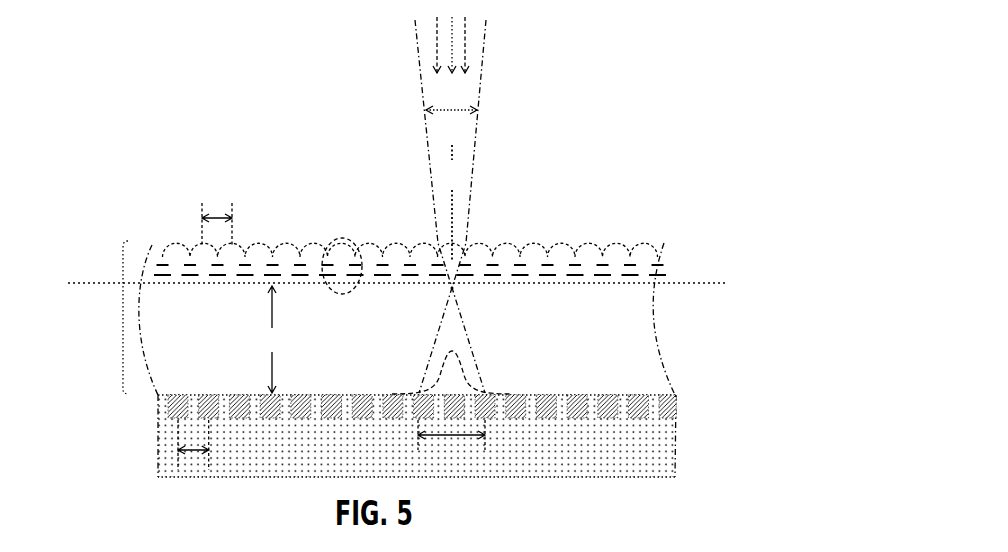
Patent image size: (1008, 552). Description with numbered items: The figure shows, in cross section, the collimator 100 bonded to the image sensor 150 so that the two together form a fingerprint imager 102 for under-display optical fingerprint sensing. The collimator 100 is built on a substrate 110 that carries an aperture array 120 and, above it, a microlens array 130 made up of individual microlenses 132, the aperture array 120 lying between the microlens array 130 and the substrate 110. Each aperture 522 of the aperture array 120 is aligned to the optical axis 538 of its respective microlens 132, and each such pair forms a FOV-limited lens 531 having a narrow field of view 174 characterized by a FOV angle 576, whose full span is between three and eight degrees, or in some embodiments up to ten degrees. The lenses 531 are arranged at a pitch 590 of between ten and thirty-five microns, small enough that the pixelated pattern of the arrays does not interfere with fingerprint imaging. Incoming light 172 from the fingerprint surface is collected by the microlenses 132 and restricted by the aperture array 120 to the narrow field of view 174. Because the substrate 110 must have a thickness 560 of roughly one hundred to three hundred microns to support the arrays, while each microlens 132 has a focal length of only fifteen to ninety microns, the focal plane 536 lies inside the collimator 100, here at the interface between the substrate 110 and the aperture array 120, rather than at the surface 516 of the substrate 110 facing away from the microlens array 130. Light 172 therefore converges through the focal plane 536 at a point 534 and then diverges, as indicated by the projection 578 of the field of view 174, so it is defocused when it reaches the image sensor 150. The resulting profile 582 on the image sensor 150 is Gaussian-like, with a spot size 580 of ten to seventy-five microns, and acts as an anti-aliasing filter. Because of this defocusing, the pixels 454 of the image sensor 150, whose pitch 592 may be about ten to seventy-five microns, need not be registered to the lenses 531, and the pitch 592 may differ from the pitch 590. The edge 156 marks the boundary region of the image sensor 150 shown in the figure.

The collimator 100 is at (122, 320).
The fingerprint imager 102 is at (98, 138).
The substrate 110 is at (654, 333).
The aperture array 120 is at (677, 269).
The microlens array 130 is at (681, 246).
The microlens 132 is at (344, 258).
The image sensor 150 is at (158, 432).
The layer edge 156 is at (666, 385).
The light 172 is at (483, 42).
The field of view 174 is at (498, 75).
The pixels 454 is at (362, 419).
The surface 516 is at (611, 407).
The aperture 522 is at (352, 238).
The FOV-limited lens 531 is at (325, 243).
The focal point 534 is at (450, 288).
The focal plane 536 is at (110, 282).
The optical axis 538 is at (449, 202).
The thickness 560 is at (269, 339).
The FOV angle 576 is at (447, 108).
The projection 578 is at (483, 332).
The spot size 580 is at (448, 440).
The profile 582 is at (493, 377).
The pitch 590 is at (220, 217).
The pitch 592 is at (188, 460).